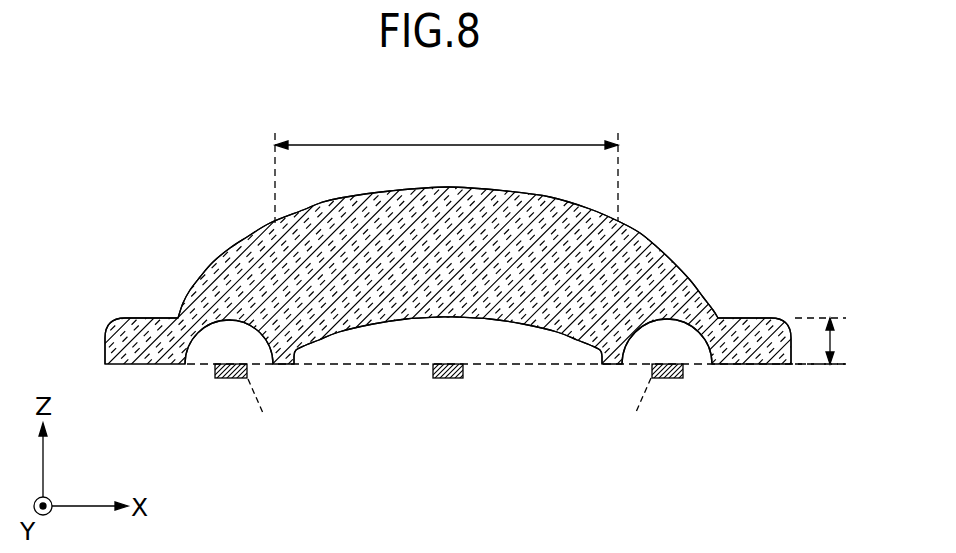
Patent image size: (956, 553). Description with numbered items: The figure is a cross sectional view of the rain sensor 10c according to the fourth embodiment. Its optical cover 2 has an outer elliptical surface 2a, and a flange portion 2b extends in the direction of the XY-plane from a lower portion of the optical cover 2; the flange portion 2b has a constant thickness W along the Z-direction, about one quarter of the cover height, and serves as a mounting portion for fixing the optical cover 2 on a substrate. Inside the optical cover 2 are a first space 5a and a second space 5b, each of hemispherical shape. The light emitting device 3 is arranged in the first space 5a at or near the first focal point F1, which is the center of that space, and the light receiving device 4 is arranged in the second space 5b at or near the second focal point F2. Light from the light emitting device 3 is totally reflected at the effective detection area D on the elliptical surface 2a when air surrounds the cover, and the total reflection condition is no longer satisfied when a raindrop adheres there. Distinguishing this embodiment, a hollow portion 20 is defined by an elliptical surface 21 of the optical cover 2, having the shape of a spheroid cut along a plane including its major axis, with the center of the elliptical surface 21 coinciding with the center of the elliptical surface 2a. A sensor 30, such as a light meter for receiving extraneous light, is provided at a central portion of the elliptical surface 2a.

The rain sensor 10c is at (202, 163).
The optical cover 2 is at (658, 258).
The elliptical surface 2a is at (343, 198).
The flange portion 2b is at (757, 320).
The hollow portion 20 is at (460, 340).
The elliptical surface 21 is at (543, 325).
The first space 5a is at (202, 352).
The second space 5b is at (690, 347).
The light emitting device 3 is at (218, 380).
The light receiving device 4 is at (677, 379).
The sensor 30 is at (445, 379).
The first focal point F1 is at (274, 407).
The second focal point F2 is at (635, 412).
The effective detection area D is at (446, 170).
The thickness W is at (830, 341).